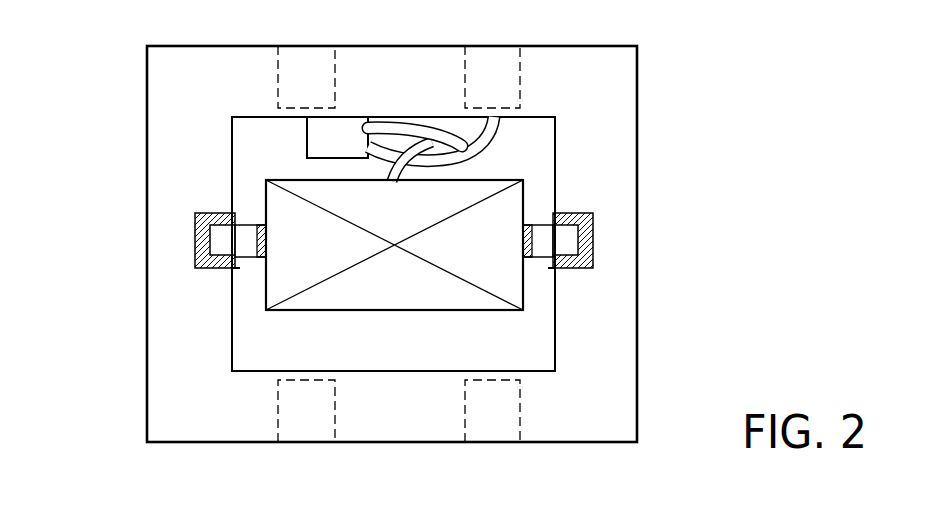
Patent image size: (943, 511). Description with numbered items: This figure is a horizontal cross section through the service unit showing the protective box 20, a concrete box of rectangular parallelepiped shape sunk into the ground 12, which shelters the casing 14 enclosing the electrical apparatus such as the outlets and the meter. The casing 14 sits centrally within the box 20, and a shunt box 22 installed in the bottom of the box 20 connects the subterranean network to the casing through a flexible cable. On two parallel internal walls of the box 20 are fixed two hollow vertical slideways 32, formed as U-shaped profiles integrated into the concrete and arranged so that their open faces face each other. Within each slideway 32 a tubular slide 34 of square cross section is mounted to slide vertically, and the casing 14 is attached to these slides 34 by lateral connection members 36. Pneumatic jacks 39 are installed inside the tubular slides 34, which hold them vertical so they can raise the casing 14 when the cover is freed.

The ground 12 is at (717, 263).
The casing 14 is at (431, 316).
The protective box 20 is at (614, 334).
The shunt box 22 is at (348, 146).
The hollow slideway 32 is at (210, 212).
The slide 34 is at (232, 272).
The lateral connection member 36 is at (252, 261).
The jack 39 is at (192, 230).